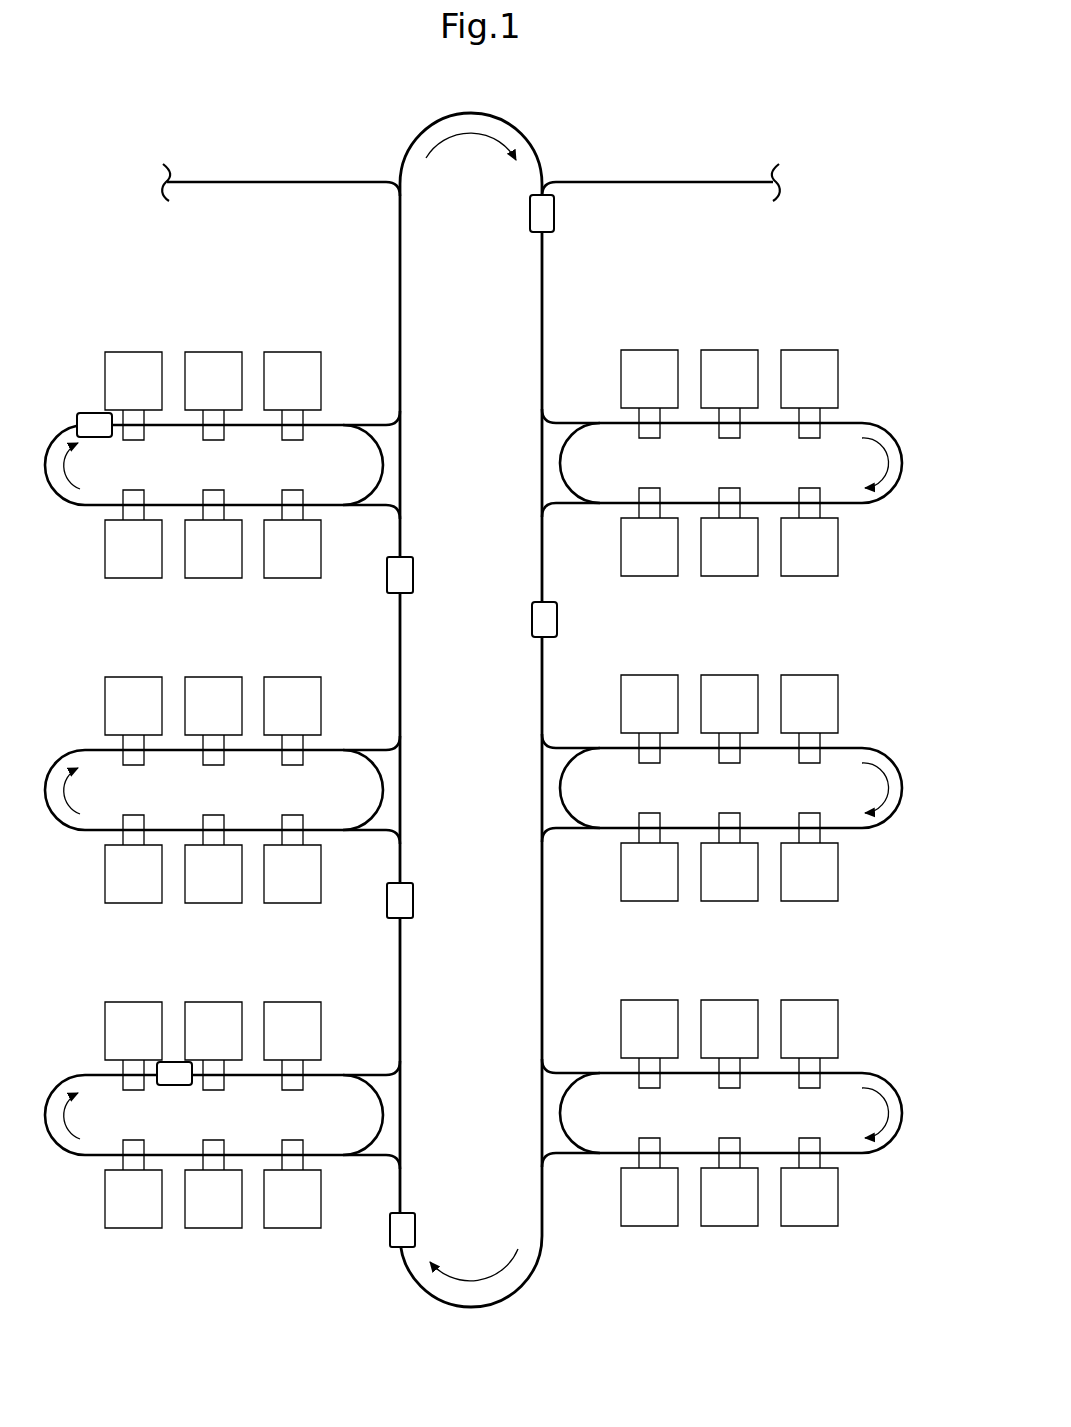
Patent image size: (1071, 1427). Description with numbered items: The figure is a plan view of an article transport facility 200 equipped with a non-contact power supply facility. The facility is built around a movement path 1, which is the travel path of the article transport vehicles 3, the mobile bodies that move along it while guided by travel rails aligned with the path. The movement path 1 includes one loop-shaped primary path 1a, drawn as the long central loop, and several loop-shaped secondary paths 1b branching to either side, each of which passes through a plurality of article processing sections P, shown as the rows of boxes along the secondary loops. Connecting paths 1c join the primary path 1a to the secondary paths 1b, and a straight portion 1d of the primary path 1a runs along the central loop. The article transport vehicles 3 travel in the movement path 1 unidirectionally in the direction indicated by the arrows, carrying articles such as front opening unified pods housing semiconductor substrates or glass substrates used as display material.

The article transport facility 200 is at (692, 125).
The movement path 1 is at (471, 699).
The primary path 1a is at (554, 151).
The secondary paths 1b is at (106, 507).
The connecting paths 1c is at (388, 422).
The straight portion of main conveyance path 1d is at (542, 575).
The article transport vehicles 3 is at (556, 213).
The article processing sections P is at (291, 352).